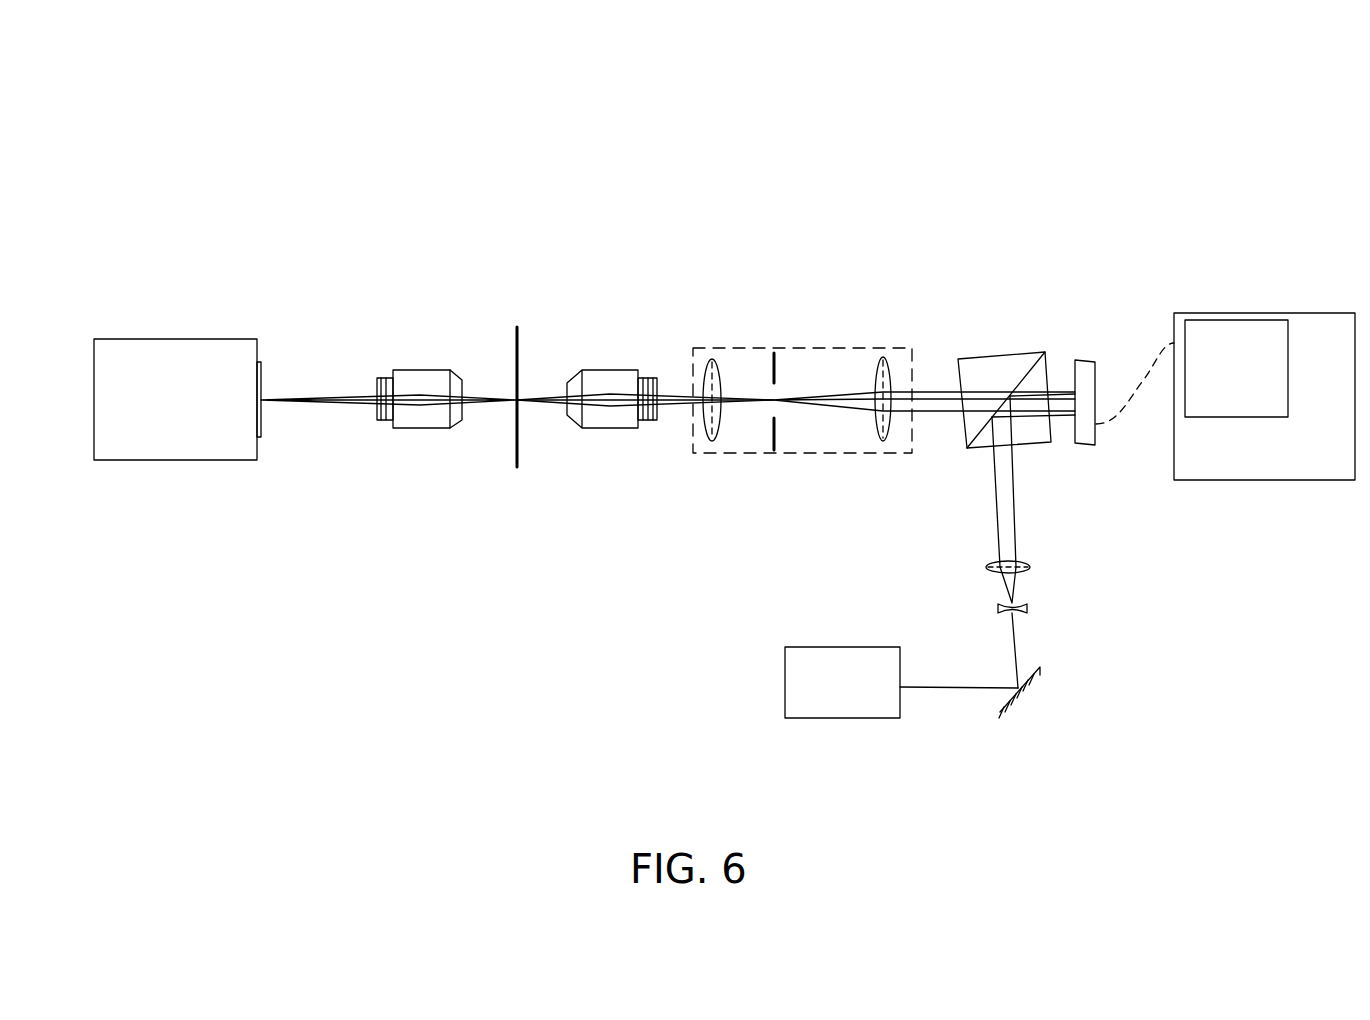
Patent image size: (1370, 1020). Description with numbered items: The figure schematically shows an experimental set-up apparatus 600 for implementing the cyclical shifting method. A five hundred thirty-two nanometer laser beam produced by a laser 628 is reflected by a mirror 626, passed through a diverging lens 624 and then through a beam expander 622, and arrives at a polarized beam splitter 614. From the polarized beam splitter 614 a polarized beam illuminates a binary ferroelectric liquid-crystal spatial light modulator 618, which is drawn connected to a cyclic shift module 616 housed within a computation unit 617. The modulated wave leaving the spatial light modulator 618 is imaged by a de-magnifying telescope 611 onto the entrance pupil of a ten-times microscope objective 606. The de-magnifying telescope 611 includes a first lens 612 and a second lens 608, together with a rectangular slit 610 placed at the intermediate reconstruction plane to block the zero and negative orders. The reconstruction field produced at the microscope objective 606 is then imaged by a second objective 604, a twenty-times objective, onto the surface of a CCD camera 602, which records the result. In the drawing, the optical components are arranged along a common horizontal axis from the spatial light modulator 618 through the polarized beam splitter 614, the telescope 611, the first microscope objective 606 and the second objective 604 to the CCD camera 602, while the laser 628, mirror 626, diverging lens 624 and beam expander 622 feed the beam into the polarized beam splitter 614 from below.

The experimental set-up apparatus 600 is at (997, 100).
The CCD camera 602 is at (177, 339).
The second objective L4 604 is at (455, 377).
The microscope objective L3 606 is at (632, 372).
The second lens L2 608 is at (722, 384).
The rectangular slit 610 is at (776, 370).
The de-magnifying telescope 611 is at (835, 348).
The first lens L1 612 is at (892, 375).
The polarized beam splitter 614 is at (1045, 365).
The cyclic shift module 616 is at (1255, 320).
The computation unit 617 is at (1288, 378).
The binary ferroelectric LC-SLM 618 is at (1095, 374).
The beam expander 622 is at (1032, 567).
The diverging lens 624 is at (1028, 608).
The mirror 626 is at (1037, 672).
The laser 628 is at (785, 683).